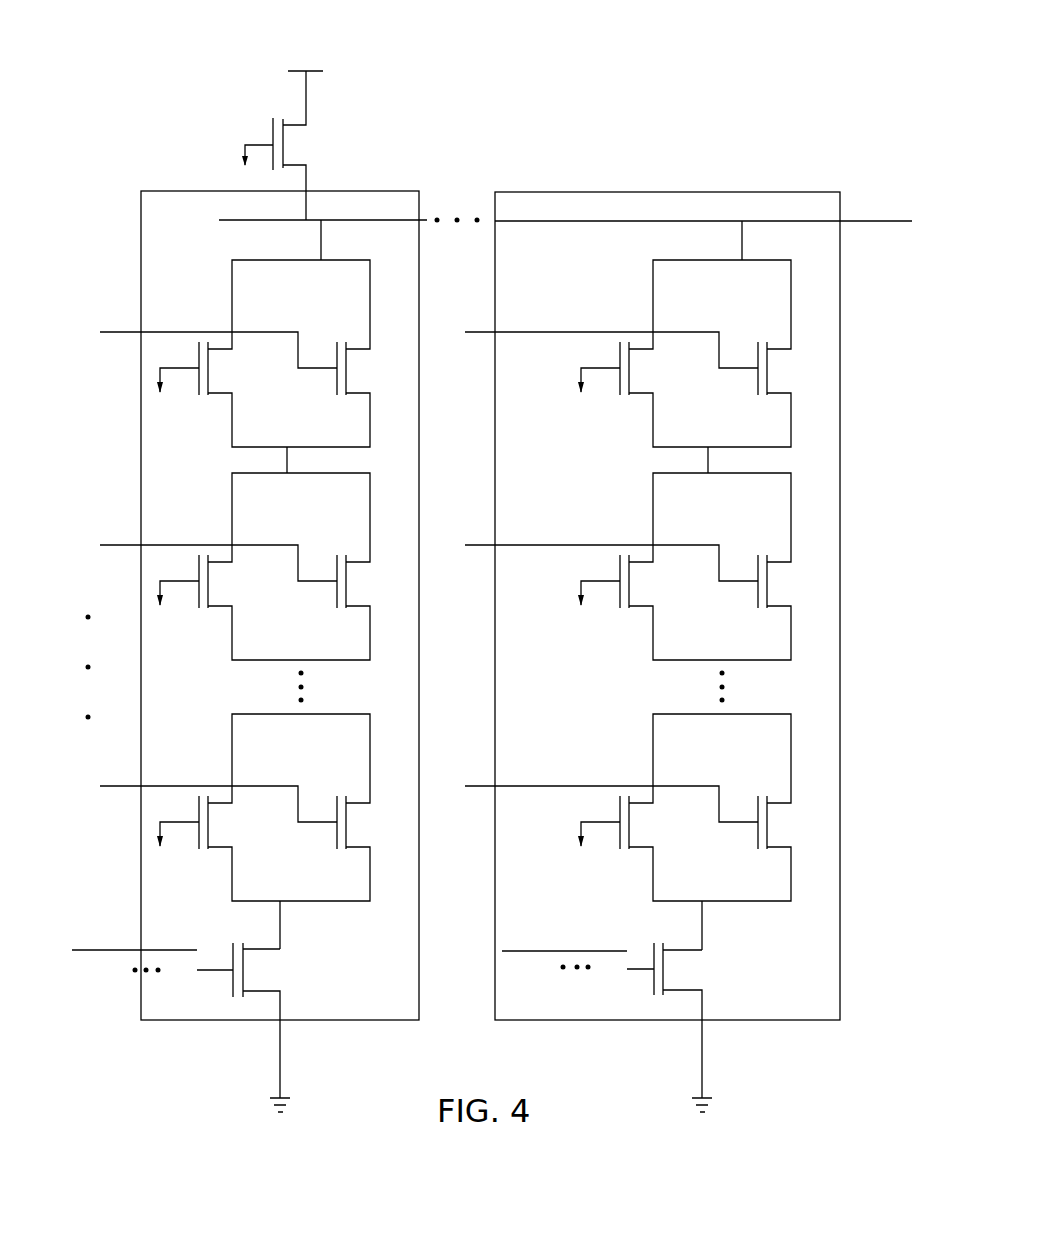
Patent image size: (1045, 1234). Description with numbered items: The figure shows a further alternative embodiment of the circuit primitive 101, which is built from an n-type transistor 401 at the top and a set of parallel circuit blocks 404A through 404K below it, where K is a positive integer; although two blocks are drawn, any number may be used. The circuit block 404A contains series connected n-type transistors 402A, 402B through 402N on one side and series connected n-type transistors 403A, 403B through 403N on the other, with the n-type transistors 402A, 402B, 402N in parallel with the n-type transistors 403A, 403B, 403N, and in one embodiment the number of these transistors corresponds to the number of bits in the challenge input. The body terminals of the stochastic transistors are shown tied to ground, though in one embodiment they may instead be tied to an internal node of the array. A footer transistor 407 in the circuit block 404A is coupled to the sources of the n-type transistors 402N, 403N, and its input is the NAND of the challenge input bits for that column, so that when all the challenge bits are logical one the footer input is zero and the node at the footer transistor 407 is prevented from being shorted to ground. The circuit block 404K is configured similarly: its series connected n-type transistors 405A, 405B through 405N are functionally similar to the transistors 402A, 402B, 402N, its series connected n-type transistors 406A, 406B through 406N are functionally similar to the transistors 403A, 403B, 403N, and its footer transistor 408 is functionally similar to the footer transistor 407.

The circuit primitive 101 is at (733, 80).
The n-type transistor 401 is at (273, 129).
The n-type transistor 402A is at (209, 368).
The n-type transistor 402B is at (209, 581).
The n-type transistor 402N is at (209, 822).
The n-type transistor 403A is at (348, 377).
The n-type transistor 403B is at (348, 590).
The n-type transistor 403N is at (348, 831).
The circuit block 404A is at (392, 191).
The circuit block 404K is at (807, 192).
The n-type transistor 405A is at (630, 368).
The n-type transistor 405B is at (630, 581).
The n-type transistor 405N is at (630, 822).
The n-type transistor 406A is at (769, 377).
The n-type transistor 406B is at (769, 590).
The n-type transistor 406N is at (769, 831).
The footer transistor 407 is at (247, 974).
The footer transistor 408 is at (668, 974).